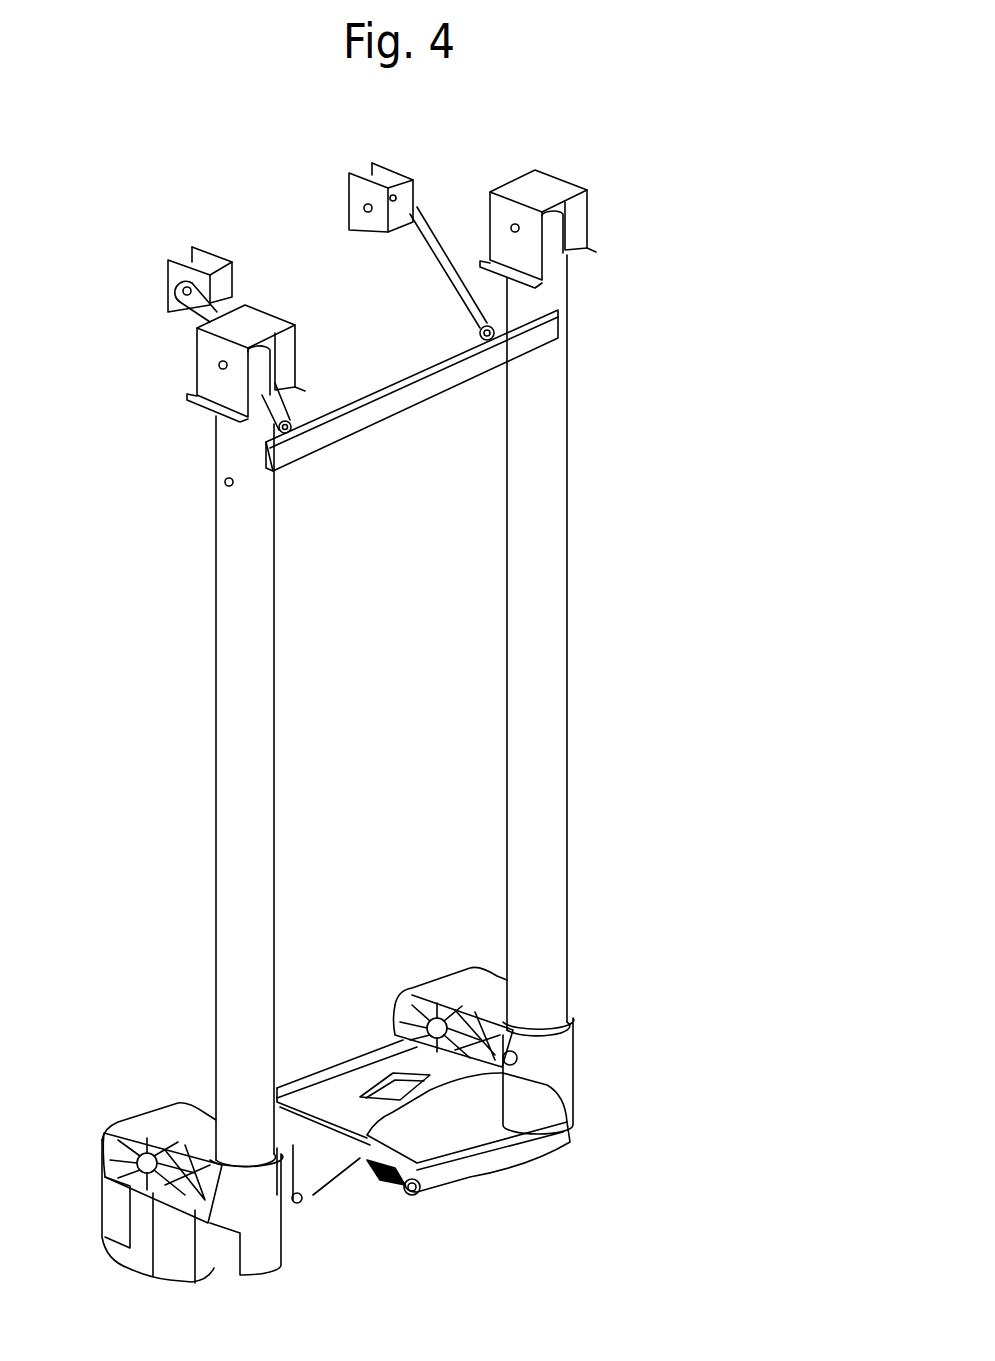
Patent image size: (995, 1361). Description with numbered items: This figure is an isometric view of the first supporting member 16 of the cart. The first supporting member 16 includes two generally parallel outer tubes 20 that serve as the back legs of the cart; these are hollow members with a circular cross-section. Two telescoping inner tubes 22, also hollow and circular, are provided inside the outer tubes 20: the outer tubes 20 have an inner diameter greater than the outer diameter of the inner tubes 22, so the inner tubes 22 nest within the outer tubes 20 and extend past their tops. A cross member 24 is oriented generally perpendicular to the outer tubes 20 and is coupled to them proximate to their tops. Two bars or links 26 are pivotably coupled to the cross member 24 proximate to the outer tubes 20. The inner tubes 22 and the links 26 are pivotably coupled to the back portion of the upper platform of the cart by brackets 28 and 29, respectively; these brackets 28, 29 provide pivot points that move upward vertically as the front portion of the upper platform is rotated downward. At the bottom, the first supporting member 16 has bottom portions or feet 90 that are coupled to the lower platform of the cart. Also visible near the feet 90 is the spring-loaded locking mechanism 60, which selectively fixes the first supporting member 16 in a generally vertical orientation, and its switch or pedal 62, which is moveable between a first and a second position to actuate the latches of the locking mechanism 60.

The first supporting member 16 is at (652, 172).
The outer tubes 20 is at (562, 626).
The inner tubes 22 is at (262, 365).
The cross member 24 is at (370, 412).
The links 26 is at (188, 310).
The brackets 28 is at (258, 321).
The brackets 29 is at (210, 262).
The locking mechanism 60 is at (545, 1182).
The pedal 62 is at (352, 1058).
The feet 90 is at (278, 1250).